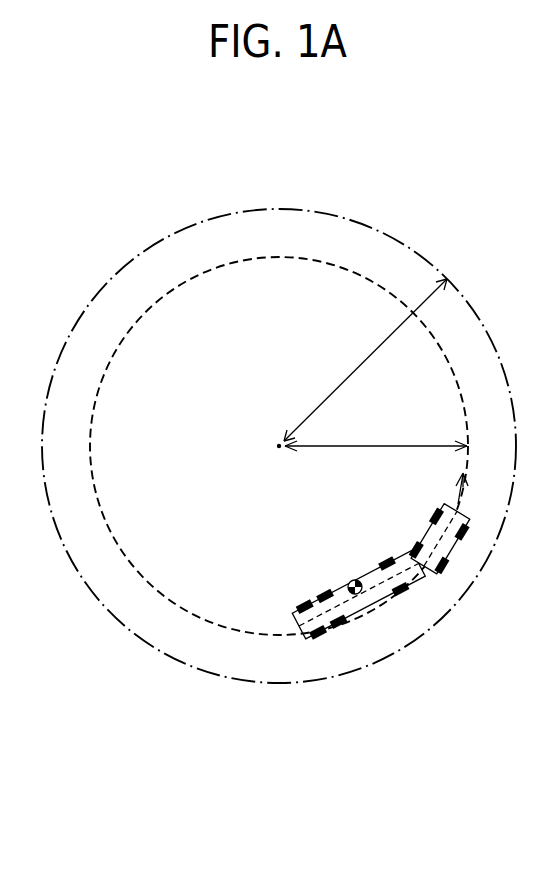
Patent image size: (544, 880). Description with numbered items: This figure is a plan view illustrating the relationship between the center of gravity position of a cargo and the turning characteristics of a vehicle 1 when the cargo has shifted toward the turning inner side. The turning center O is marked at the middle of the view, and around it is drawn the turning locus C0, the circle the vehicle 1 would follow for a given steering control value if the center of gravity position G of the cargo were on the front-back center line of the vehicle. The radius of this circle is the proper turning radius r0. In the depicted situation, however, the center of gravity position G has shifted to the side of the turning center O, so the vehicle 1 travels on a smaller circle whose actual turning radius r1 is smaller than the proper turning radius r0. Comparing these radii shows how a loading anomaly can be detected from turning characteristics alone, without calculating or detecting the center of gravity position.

The turning locus C0 is at (464, 291).
The proper turning radius r0 is at (365, 360).
The actual turning radius r1 is at (376, 431).
The turning center O is at (277, 462).
The vehicle 1 is at (418, 574).
The center of gravity position G is at (351, 587).